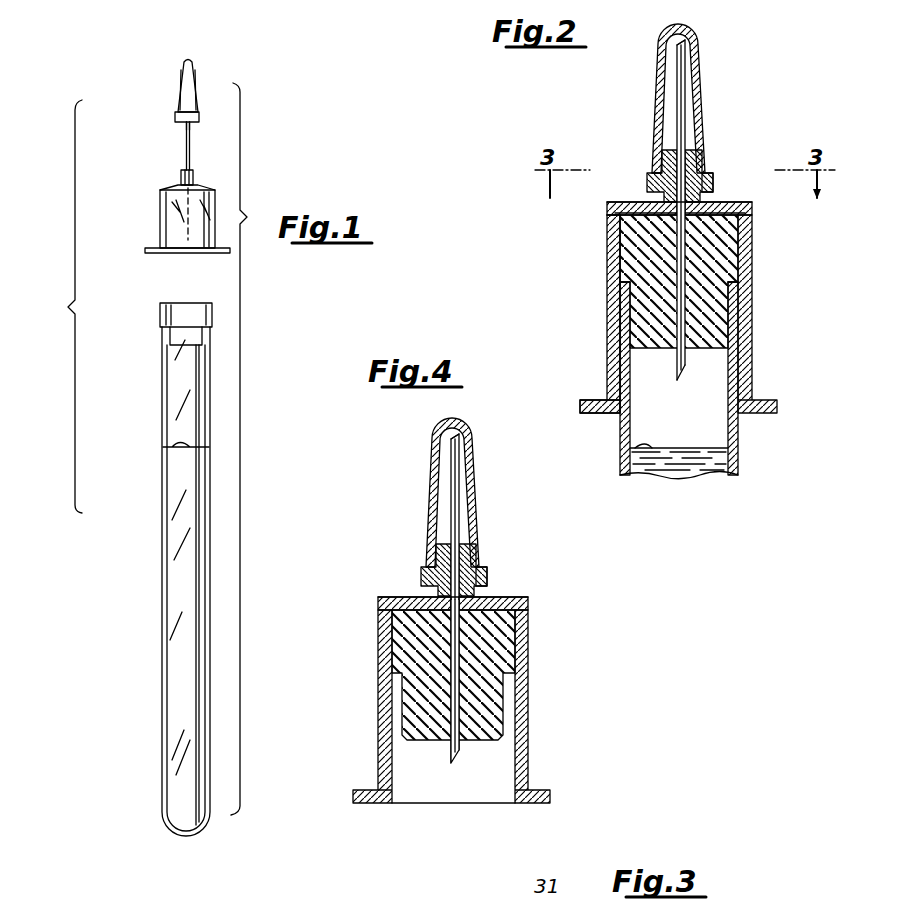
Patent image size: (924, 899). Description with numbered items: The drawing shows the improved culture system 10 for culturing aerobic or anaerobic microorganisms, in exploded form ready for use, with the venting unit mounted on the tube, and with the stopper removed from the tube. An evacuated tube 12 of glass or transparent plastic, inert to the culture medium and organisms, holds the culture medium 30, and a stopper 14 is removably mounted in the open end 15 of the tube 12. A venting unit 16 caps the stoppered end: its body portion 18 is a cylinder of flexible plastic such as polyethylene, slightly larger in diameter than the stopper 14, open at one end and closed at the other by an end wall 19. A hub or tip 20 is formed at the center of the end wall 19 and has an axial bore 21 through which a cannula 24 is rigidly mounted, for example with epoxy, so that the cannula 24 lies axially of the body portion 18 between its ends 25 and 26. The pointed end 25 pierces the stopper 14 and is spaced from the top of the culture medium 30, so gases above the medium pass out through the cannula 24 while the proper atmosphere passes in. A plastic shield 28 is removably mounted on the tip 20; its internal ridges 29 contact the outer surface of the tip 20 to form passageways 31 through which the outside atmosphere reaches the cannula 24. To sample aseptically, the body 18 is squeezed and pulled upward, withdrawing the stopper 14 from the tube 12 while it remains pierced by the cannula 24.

In FIG. 1, the culture system 10 is at (141, 449).
In FIG. 1, the evacuated tube 12 is at (180, 535).
In FIG. 2, the evacuated tube 12 is at (740, 447).
In FIG. 1, the stopper 14 is at (160, 312).
In FIG. 2, the stopper 14 is at (628, 258).
In FIG. 4, the stopper 14 is at (410, 654).
In FIG. 1, the open end 15 is at (168, 332).
In FIG. 2, the open end 15 is at (622, 306).
In FIG. 1, the venting unit 16 is at (140, 220).
In FIG. 2, the venting unit 16 is at (782, 283).
In FIG. 4, the venting unit 16 is at (555, 636).
In FIG. 1, the body portion 18 is at (158, 230).
In FIG. 2, the body portion 18 is at (752, 358).
In FIG. 4, the body portion 18 is at (528, 746).
In FIG. 1, the end wall 19 is at (168, 186).
In FIG. 2, the end wall 19 is at (615, 203).
In FIG. 4, the end wall 19 is at (385, 598).
In FIG. 1, the hub or tip 20 is at (194, 178).
In FIG. 2, the hub or tip 20 is at (702, 165).
In FIG. 4, the hub or tip 20 is at (478, 565).
In FIG. 2, the axial bore 21 is at (724, 208).
In FIG. 1, the cannula 24 is at (185, 150).
In FIG. 2, the cannula 24 is at (688, 120).
In FIG. 4, the cannula 24 is at (490, 599).
In FIG. 1, the pointed end 25 is at (188, 242).
In FIG. 2, the pointed end 25 is at (679, 382).
In FIG. 4, the pointed end 25 is at (452, 766).
In FIG. 1, the end 26 is at (185, 130).
In FIG. 2, the end 26 is at (680, 68).
In FIG. 4, the end 26 is at (417, 449).
In FIG. 1, the plastic shield 28 is at (182, 82).
In FIG. 2, the plastic shield 28 is at (655, 105).
In FIG. 4, the plastic shield 28 is at (474, 492).
In FIG. 2, the internal ridges 29 is at (656, 162).
In FIG. 1, the culture medium 30 is at (168, 446).
In FIG. 2, the culture medium 30 is at (636, 446).
In FIG. 2, the passageways 31 is at (714, 180).
In FIG. 4, the passageways 31 is at (507, 573).